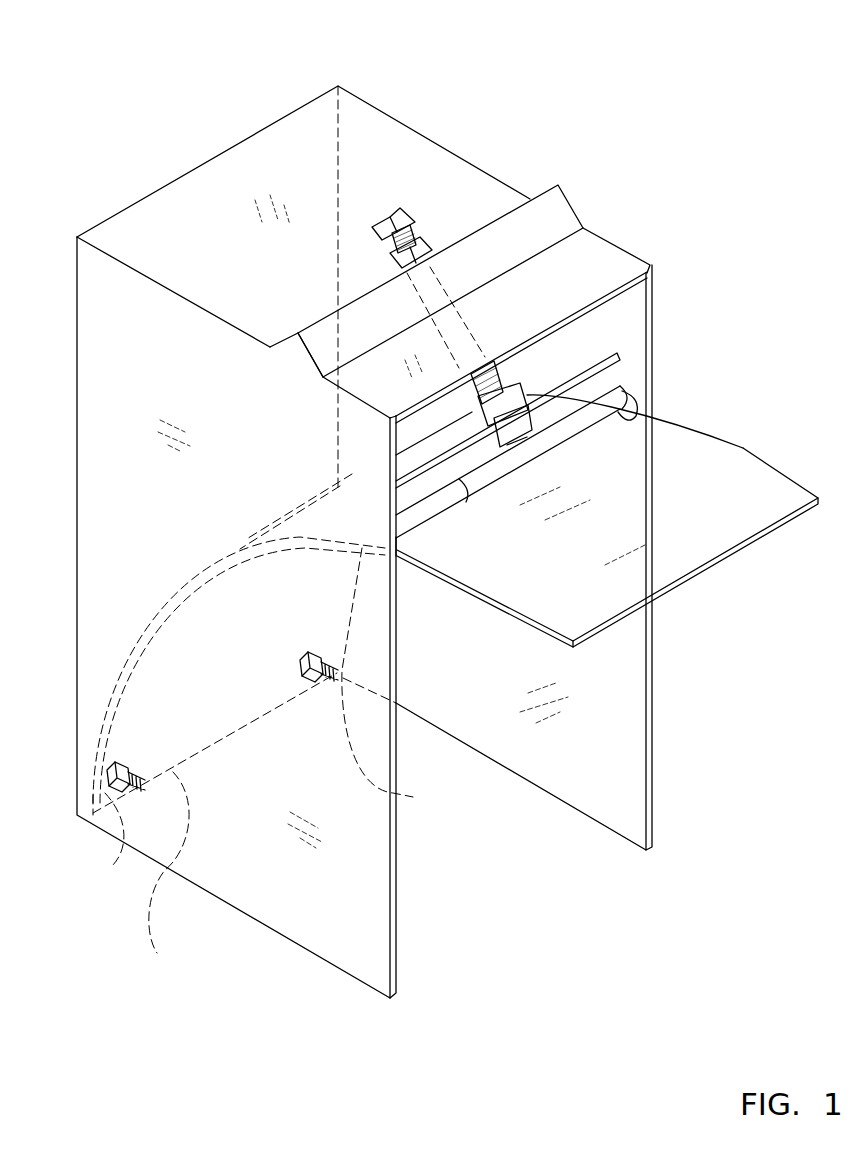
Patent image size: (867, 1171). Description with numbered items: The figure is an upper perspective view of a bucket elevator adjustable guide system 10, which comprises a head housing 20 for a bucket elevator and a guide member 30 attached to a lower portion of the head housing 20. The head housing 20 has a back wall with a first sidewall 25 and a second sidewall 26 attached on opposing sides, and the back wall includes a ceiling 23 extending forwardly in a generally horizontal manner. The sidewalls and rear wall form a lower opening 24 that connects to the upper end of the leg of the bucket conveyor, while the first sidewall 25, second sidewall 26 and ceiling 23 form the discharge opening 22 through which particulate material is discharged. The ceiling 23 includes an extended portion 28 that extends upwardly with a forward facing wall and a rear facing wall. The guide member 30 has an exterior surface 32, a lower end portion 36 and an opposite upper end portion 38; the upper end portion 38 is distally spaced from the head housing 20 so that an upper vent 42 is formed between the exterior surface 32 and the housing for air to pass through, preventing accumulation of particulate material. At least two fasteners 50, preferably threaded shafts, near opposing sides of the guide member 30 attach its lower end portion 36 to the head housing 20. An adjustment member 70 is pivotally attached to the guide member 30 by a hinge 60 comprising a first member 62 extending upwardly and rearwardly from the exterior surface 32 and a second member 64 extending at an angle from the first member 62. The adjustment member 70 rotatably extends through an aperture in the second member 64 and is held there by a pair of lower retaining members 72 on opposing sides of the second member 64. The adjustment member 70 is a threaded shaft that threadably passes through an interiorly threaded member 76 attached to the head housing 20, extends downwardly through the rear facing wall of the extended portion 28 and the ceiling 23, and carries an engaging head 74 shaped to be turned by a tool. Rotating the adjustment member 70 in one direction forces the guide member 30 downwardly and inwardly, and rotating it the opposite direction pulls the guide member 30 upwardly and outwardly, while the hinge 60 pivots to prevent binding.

The bucket elevator adjustable guide system 10 is at (447, 543).
The head housing 20 is at (419, 543).
The discharge opening 22 is at (578, 594).
The ceiling 23 is at (286, 152).
The lower opening 24 is at (562, 802).
The first sidewall 25 is at (323, 903).
The second sidewall 26 is at (617, 667).
The extended portion 28 is at (298, 355).
The guide member 30 is at (619, 493).
The exterior surface 32 is at (745, 508).
The lower end portion 36 is at (253, 724).
The upper end portion 38 is at (747, 543).
The upper vent 42 is at (607, 335).
The fasteners 50 is at (110, 861).
The hinge 60 is at (571, 440).
The first member 62 is at (607, 406).
The second member 64 is at (612, 368).
The adjustment member 70 is at (500, 370).
The lower retaining members 72 is at (522, 396).
The engaging head 74 is at (408, 215).
The interiorly threaded member 76 is at (433, 247).